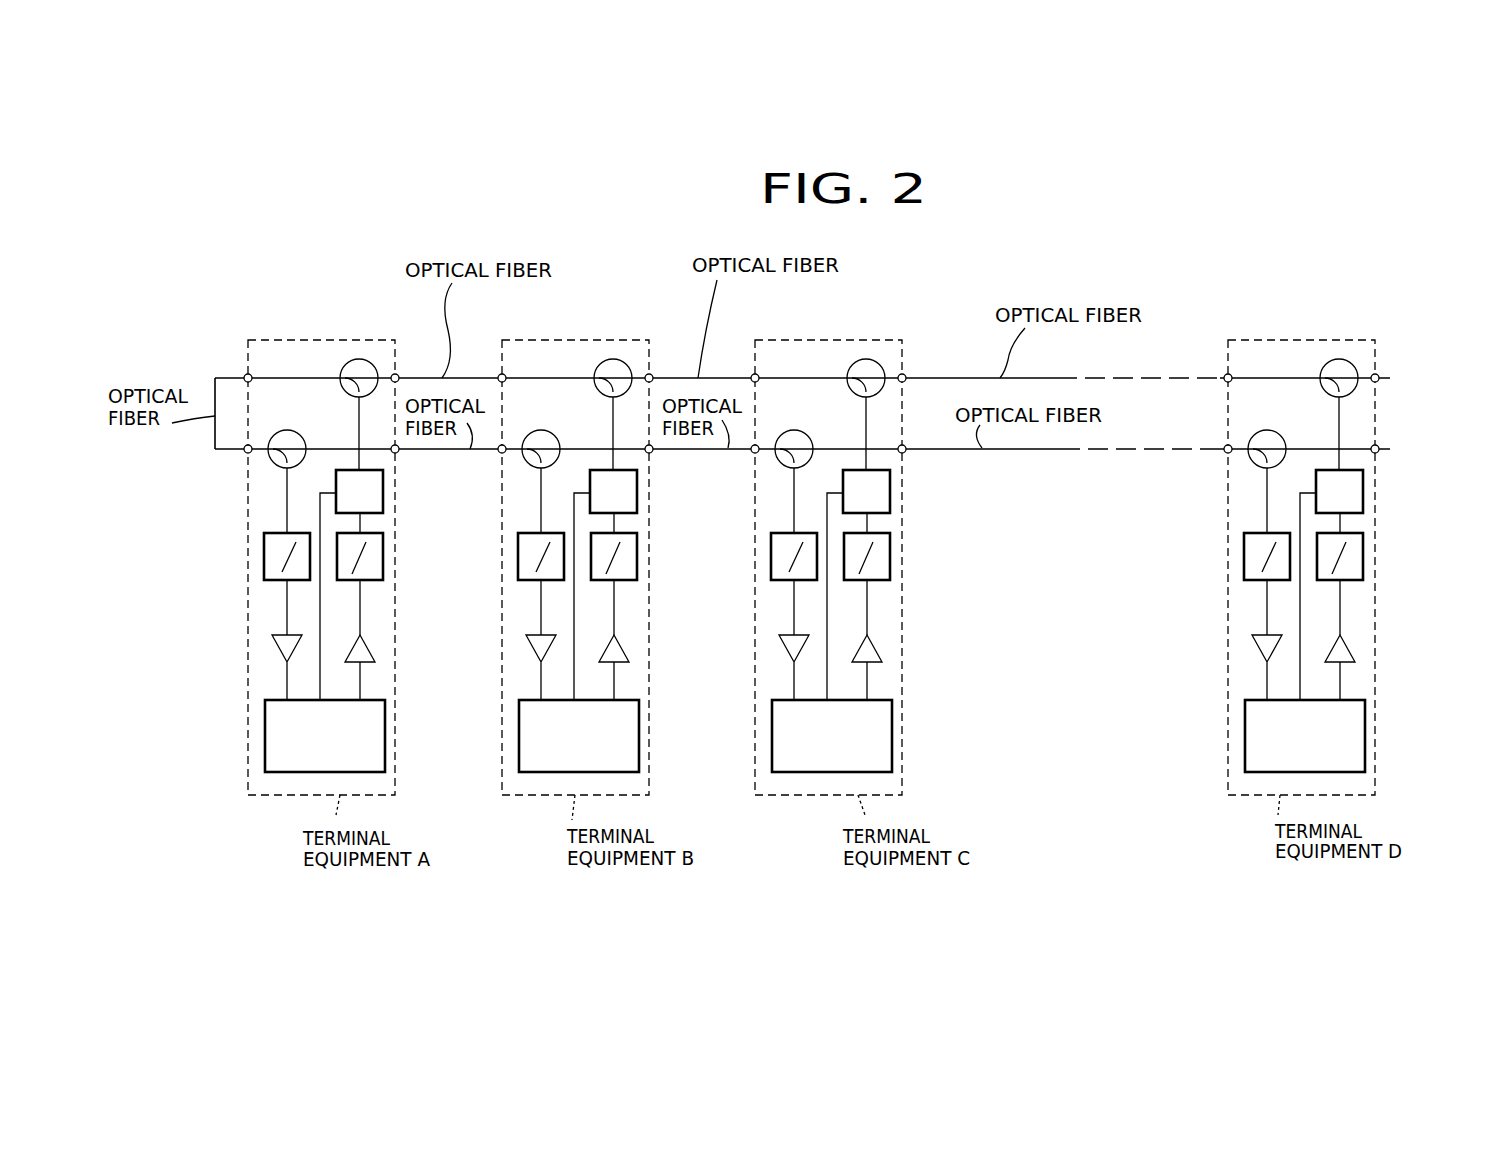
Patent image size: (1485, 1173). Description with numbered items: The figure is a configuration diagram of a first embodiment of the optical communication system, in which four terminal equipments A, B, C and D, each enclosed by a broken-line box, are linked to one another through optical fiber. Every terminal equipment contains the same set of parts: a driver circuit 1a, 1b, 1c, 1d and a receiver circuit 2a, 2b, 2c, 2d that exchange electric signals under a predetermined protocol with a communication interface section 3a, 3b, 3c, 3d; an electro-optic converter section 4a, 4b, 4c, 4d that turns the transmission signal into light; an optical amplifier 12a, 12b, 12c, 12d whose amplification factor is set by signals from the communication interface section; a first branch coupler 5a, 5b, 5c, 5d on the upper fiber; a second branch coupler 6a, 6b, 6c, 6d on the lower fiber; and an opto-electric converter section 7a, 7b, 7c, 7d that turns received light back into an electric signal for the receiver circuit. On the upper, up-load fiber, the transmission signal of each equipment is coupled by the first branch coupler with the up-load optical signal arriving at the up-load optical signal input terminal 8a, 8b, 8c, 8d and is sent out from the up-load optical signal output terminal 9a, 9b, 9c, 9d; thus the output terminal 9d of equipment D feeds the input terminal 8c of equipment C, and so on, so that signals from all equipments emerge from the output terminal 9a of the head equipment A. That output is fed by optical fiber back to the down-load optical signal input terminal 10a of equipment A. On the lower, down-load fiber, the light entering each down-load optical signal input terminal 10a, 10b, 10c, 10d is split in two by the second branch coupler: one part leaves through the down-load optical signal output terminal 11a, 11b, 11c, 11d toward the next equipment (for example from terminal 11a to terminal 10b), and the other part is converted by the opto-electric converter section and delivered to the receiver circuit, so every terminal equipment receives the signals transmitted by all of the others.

The driver circuit 1a is at (377, 650).
The driver circuit 1b is at (653, 666).
The driver circuit 1c is at (916, 666).
The driver circuit 1d is at (1390, 657).
The receiver circuit 2a is at (280, 650).
The receiver circuit 2b is at (503, 672).
The receiver circuit 2c is at (749, 667).
The receiver circuit 2d is at (1222, 667).
The communication interface section 3a is at (275, 772).
The communication interface section 3b is at (573, 777).
The communication interface section 3c is at (829, 777).
The communication interface section 3d is at (1283, 776).
The electro-optic converter section 4a is at (383, 555).
The electro-optic converter section 4b is at (648, 584).
The electro-optic converter section 4c is at (917, 584).
The electro-optic converter section 4d is at (1381, 580).
The first branch coupler 5a is at (359, 359).
The first branch coupler 5b is at (616, 373).
The first branch coupler 5c is at (873, 379).
The first branch coupler 5d is at (1339, 373).
The second branch coupler 6a is at (274, 462).
The second branch coupler 6b is at (511, 493).
The second branch coupler 6c is at (765, 496).
The second branch coupler 6d is at (1221, 481).
The opto-electric converter section 7a is at (264, 560).
The opto-electric converter section 7b is at (503, 584).
The opto-electric converter section 7c is at (753, 584).
The opto-electric converter section 7d is at (1221, 584).
The up-load optical signal input terminal 8a is at (395, 378).
The up-load optical signal input terminal 8b is at (670, 350).
The up-load optical signal input terminal 8c is at (929, 350).
The up-load optical signal input terminal 8d is at (1410, 352).
The up-load optical signal output terminal 9a is at (248, 378).
The up-load optical signal output terminal 9b is at (487, 345).
The up-load optical signal output terminal 9c is at (738, 351).
The up-load optical signal output terminal 9d is at (1202, 350).
The down-load optical signal input terminal 10a is at (248, 449).
The down-load optical signal input terminal 10b is at (474, 480).
The down-load optical signal input terminal 10c is at (724, 482).
The down-load optical signal input terminal 10d is at (1192, 465).
The down-load optical signal output terminal 11a is at (395, 449).
The down-load optical signal output terminal 11b is at (685, 467).
The down-load optical signal output terminal 11c is at (943, 467).
The down-load optical signal output terminal 11d is at (1416, 436).
The optical amplifier 12a is at (383, 493).
The optical amplifier 12b is at (655, 507).
The optical amplifier 12c is at (920, 501).
The optical amplifier 12d is at (1384, 501).